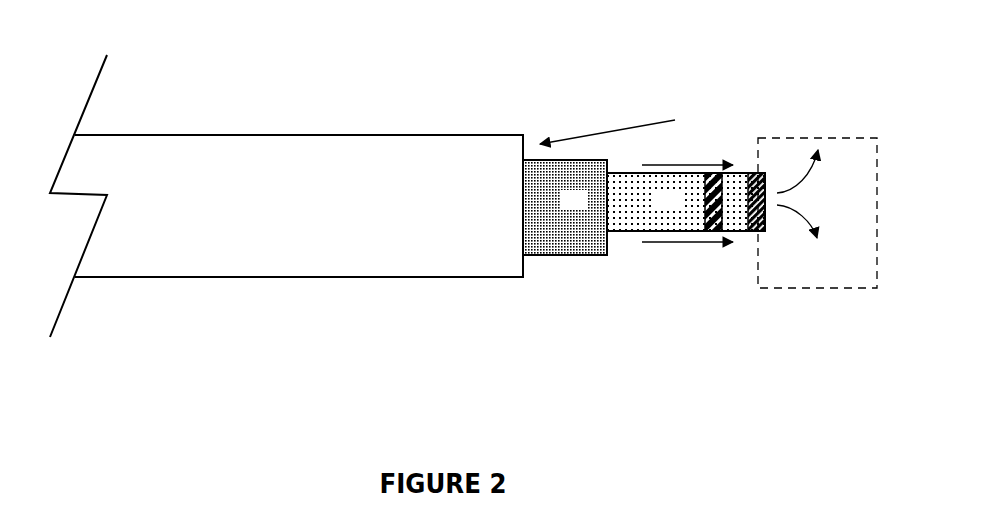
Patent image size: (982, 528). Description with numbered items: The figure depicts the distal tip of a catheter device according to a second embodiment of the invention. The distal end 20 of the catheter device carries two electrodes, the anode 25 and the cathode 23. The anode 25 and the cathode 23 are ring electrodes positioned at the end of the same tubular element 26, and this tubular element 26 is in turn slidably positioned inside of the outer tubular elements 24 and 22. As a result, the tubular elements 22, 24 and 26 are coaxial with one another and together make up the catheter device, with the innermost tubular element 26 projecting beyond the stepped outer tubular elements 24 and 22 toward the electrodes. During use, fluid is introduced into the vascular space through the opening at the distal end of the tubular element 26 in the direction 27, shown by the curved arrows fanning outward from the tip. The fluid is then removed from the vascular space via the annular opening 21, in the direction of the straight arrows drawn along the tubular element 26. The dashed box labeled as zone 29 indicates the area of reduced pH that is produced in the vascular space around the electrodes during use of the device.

The distal end 20 is at (281, 96).
The annular opening 21 is at (538, 269).
The outer tubular element 22 is at (261, 216).
The cathode 23 is at (710, 170).
The outer tubular element 24 is at (588, 214).
The anode 25 is at (760, 173).
The tubular element 26 is at (652, 214).
The direction of fluid introduction 27 is at (816, 194).
The zone of reduced pH 29 is at (793, 293).